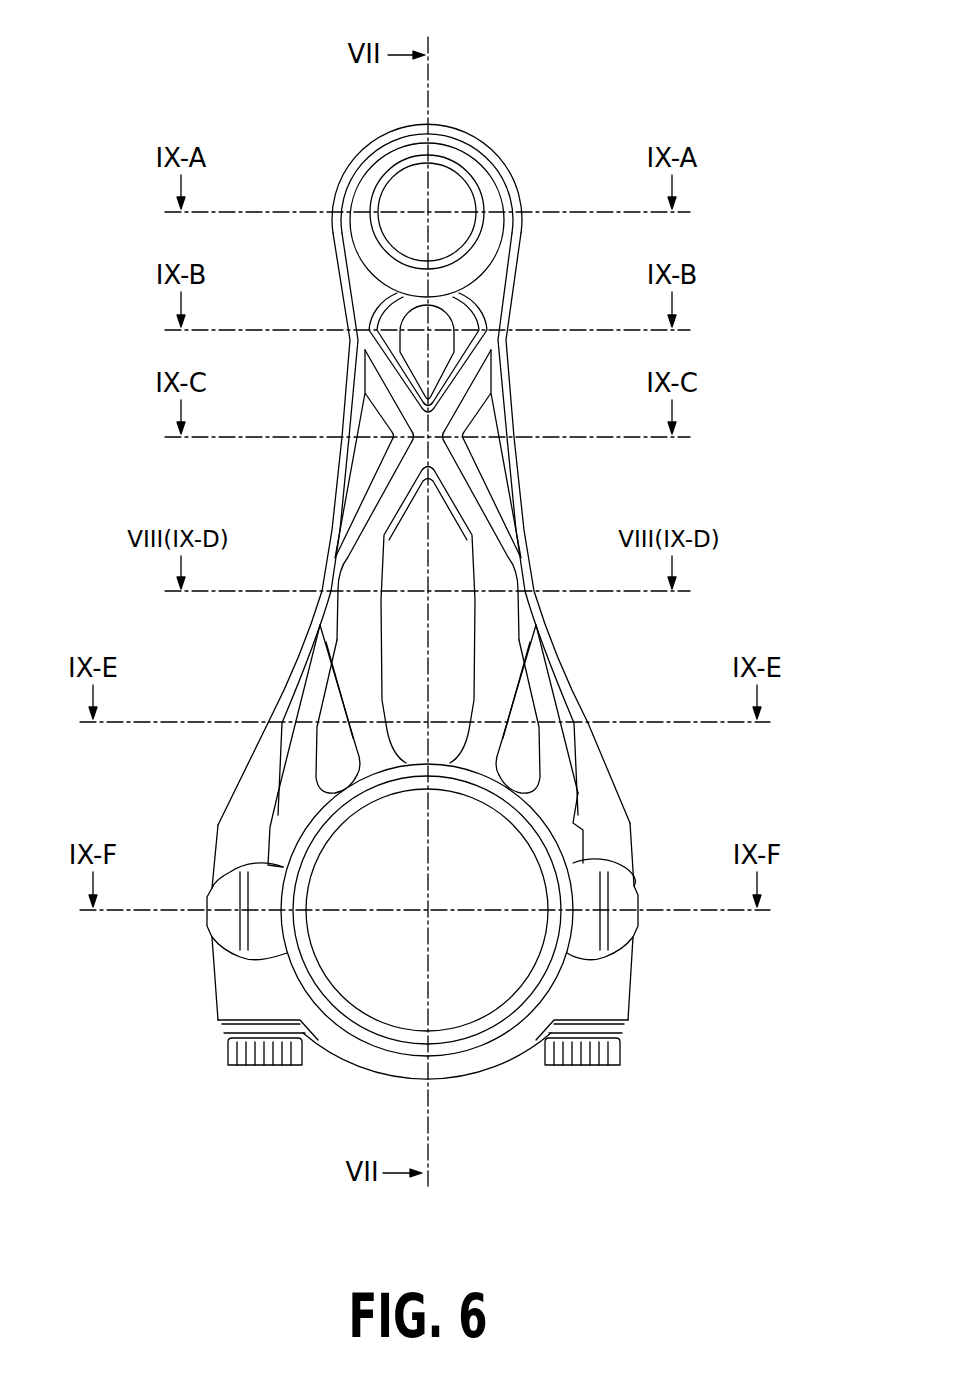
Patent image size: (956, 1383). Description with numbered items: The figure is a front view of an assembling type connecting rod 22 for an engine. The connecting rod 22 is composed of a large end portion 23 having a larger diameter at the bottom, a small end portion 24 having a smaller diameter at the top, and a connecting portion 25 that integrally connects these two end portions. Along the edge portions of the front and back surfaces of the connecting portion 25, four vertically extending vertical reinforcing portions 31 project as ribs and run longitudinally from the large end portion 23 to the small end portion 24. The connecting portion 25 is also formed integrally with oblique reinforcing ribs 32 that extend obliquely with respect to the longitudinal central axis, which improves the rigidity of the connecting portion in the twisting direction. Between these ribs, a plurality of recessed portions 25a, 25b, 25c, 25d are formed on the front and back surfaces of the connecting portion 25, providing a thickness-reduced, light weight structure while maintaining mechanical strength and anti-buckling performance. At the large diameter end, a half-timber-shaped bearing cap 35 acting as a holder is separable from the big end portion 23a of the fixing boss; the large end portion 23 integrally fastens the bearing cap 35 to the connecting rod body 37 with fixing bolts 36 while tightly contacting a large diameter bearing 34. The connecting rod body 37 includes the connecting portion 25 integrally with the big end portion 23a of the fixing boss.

The connecting rod 22 is at (491, 78).
The large end portion 23 is at (641, 886).
The big end portion of fixing boss 23a is at (631, 823).
The small end portion 24 is at (500, 151).
The connecting portion 25 is at (516, 500).
The recessed portion 25a is at (432, 632).
The recessed portion 25b is at (430, 362).
The recessed portion 25c is at (377, 443).
The recessed portion 25d is at (527, 712).
The vertical reinforcing portion 31 is at (336, 560).
The oblique reinforcing rib 32 is at (390, 393).
The large diameter bearing 34 is at (340, 990).
The bearing cap 35 is at (462, 1078).
The fixing bolt 36 is at (262, 1066).
The connecting rod body 37 is at (258, 757).